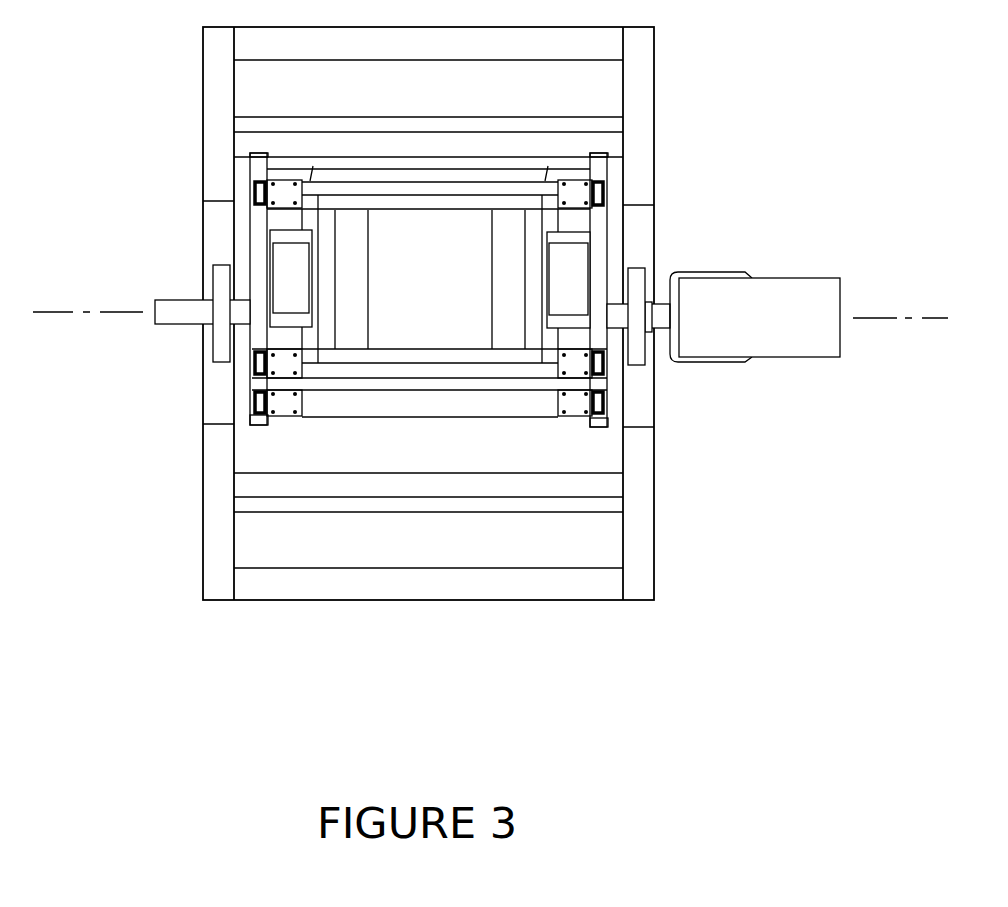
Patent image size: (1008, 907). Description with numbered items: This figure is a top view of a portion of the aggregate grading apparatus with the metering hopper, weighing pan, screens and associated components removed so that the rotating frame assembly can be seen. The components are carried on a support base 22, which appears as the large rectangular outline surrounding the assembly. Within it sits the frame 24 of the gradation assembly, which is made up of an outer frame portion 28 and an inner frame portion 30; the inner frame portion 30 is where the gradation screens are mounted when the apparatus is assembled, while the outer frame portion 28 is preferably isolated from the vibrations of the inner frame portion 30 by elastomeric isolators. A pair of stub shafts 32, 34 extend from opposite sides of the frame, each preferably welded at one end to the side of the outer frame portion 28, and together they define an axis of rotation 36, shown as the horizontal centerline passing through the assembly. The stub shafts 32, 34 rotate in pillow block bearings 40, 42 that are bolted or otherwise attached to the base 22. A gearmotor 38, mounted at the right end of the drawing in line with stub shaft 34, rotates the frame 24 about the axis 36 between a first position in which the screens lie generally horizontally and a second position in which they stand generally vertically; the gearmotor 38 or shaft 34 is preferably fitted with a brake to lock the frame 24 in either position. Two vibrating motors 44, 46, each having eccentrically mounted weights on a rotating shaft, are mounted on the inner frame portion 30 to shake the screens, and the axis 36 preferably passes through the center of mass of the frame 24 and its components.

The support base 22 is at (453, 603).
The frame 24 is at (397, 417).
The outer frame portion 28 is at (470, 403).
The inner frame portion 30 is at (390, 357).
The stub shaft 32 is at (242, 317).
The stub shaft 34 is at (617, 318).
The axis of rotation 36 is at (925, 318).
The gearmotor 38 is at (795, 302).
The pillow block bearing 40 is at (220, 278).
The pillow block bearing 42 is at (637, 350).
The vibrating motor 44 is at (293, 278).
The vibrating motor 46 is at (570, 263).